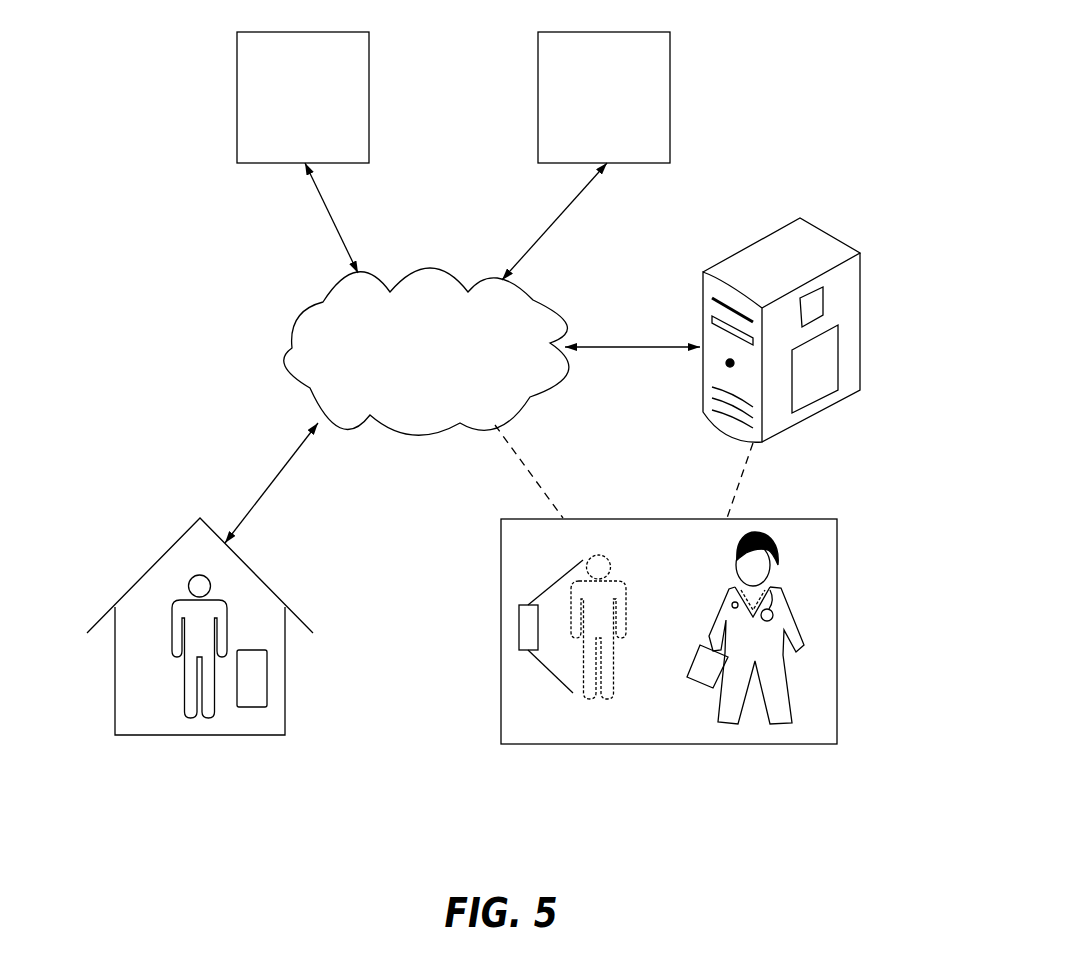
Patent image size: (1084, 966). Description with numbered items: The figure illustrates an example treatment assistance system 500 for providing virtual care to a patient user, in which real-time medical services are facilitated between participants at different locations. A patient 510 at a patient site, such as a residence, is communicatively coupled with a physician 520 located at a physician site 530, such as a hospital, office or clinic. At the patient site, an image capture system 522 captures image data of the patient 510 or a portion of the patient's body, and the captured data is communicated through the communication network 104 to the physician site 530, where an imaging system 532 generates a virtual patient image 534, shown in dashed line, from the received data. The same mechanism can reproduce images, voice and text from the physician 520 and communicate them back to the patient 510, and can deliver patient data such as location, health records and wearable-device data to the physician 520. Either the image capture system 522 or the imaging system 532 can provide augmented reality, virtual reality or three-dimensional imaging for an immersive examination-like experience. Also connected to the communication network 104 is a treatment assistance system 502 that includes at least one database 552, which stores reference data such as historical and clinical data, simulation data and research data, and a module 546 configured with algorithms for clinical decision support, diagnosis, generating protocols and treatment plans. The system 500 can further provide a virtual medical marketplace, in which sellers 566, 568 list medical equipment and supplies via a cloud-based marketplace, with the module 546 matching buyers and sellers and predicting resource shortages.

The treatment assistance system 500 is at (499, 420).
The seller 566 is at (369, 70).
The seller 568 is at (670, 70).
The communication network 104 is at (405, 394).
The treatment assistance system 502 is at (820, 314).
The database 552 is at (812, 290).
The module 546 is at (838, 353).
The patient 510 is at (208, 705).
The image capture system 522 is at (268, 675).
The physician site 530 is at (837, 567).
The imaging system 532 is at (519, 615).
The virtual patient image 534 is at (583, 670).
The physician 520 is at (782, 675).